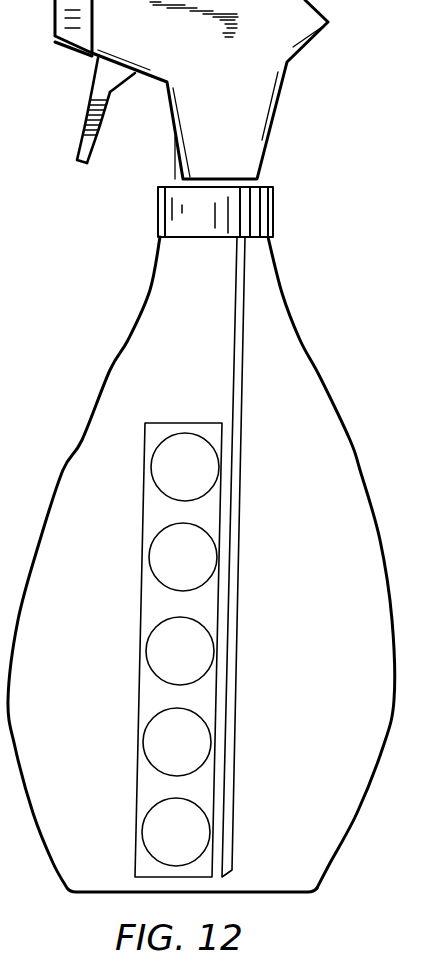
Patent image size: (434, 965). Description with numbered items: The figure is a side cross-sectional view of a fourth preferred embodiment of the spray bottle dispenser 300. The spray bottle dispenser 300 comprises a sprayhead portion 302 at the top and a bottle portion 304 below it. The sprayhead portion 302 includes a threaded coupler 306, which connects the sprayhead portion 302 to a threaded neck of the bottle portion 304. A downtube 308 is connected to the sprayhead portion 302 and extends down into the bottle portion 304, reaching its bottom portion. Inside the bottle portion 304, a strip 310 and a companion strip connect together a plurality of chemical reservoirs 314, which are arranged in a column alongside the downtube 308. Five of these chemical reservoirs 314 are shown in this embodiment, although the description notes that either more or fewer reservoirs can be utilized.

The spray bottle dispenser 300 is at (207, 446).
The sprayhead portion 302 is at (255, 112).
The bottle portion 304 is at (340, 453).
The threaded coupler 306 is at (273, 208).
The downtube 308 is at (232, 630).
The strip 310 is at (147, 530).
The chemical reservoirs 314 is at (163, 525).